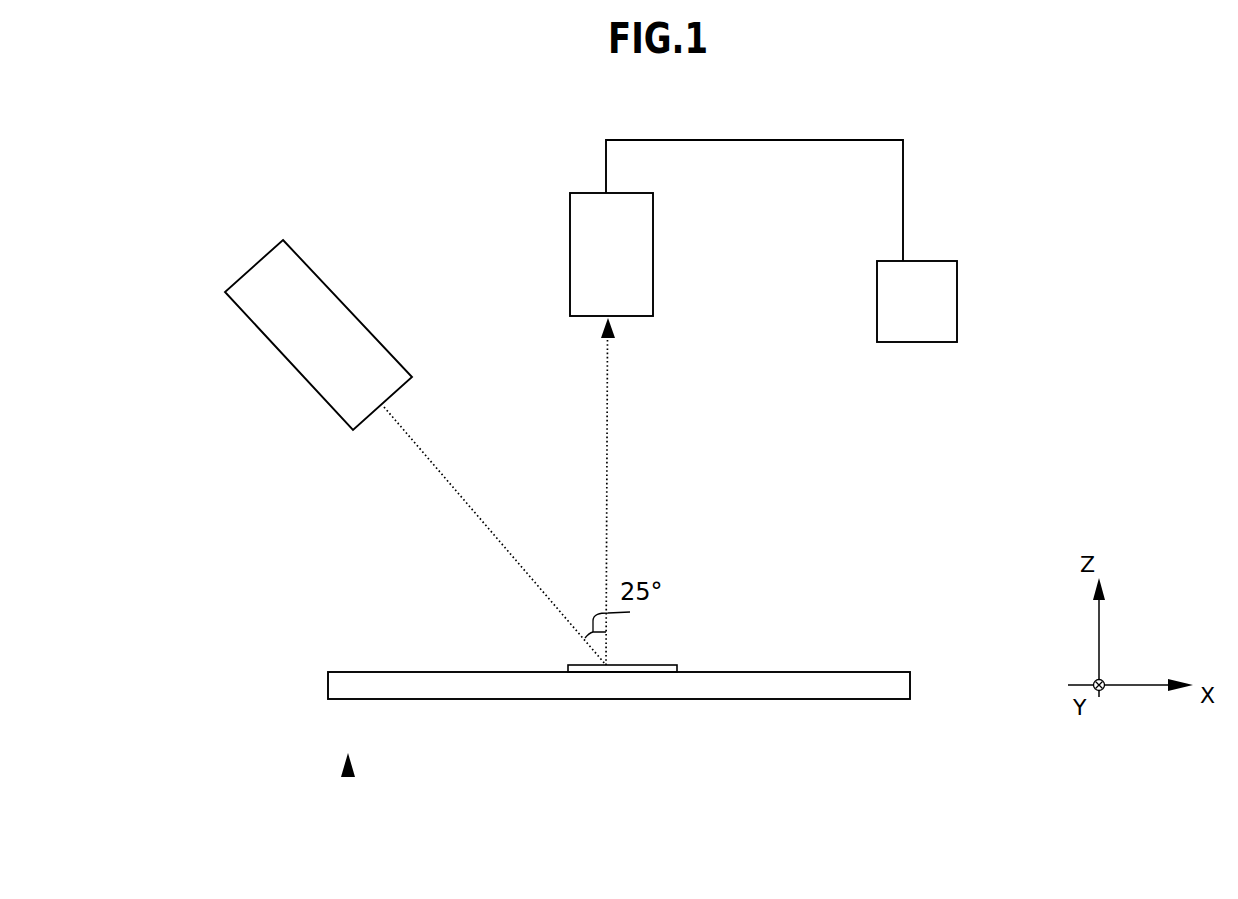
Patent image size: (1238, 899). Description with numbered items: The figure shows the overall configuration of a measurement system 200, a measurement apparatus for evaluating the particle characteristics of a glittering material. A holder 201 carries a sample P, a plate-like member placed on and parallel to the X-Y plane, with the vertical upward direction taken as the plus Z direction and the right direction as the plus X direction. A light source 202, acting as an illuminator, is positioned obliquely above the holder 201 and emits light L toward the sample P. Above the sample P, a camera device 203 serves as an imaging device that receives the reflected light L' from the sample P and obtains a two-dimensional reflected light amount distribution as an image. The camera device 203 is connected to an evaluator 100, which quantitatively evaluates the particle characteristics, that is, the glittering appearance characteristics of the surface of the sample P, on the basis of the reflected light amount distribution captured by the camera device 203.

The evaluator 100 is at (922, 342).
The measurement system 200 is at (347, 777).
The holder 201 is at (607, 700).
The light source 202 is at (225, 292).
The camera device 203 is at (653, 228).
The sample P is at (665, 665).
The light L is at (495, 536).
The reflected light L' is at (631, 491).